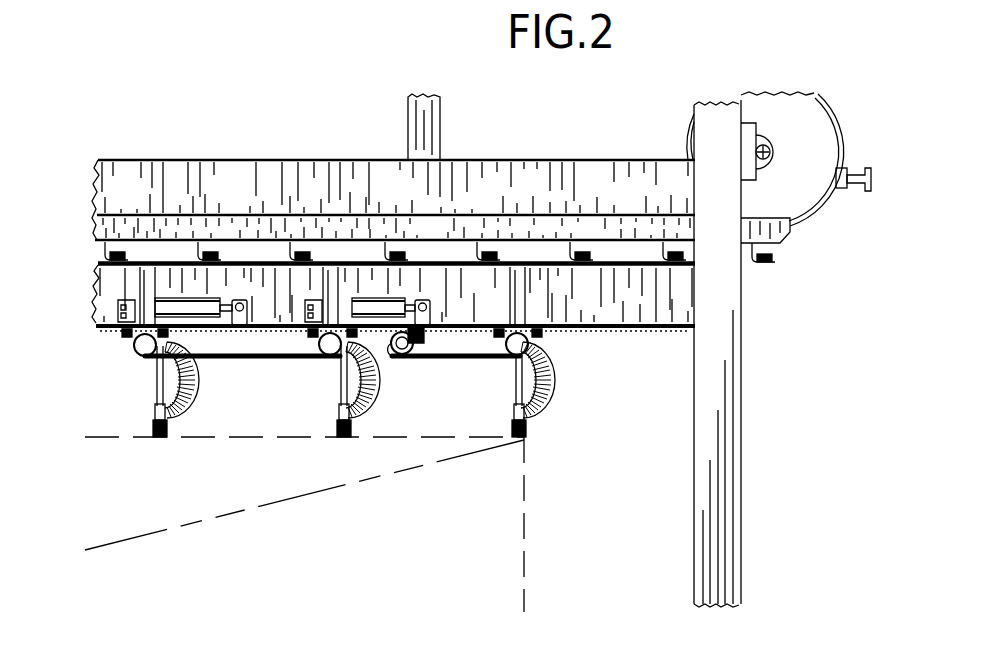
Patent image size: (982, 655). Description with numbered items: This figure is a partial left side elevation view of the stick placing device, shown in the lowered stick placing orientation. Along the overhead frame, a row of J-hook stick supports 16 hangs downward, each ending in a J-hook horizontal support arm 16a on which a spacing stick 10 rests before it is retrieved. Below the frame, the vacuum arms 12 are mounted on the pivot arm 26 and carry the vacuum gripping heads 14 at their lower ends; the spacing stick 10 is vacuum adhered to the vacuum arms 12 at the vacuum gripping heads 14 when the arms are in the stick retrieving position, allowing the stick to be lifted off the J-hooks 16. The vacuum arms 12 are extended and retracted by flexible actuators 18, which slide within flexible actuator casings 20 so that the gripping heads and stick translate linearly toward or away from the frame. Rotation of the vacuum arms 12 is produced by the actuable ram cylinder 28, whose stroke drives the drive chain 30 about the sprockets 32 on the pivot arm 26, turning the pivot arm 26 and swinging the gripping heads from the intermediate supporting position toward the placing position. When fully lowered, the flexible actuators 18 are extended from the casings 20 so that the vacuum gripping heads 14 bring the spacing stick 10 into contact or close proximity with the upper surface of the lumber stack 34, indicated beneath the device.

The spacing stick 10 is at (481, 349).
The vacuum arm 12 is at (126, 379).
The vacuum gripping head 14 is at (155, 425).
The J-hook stick support 16 is at (755, 262).
The J-hook horizontal support arm 16a is at (770, 265).
The flexible actuator 18 is at (155, 389).
The flexible actuator casing 20 is at (155, 364).
The pivot arm 26 is at (128, 340).
The actuable ram cylinder 28 is at (187, 297).
The drive chain 30 is at (235, 357).
The sprocket 32 is at (133, 347).
The lumber stack 34 is at (457, 555).